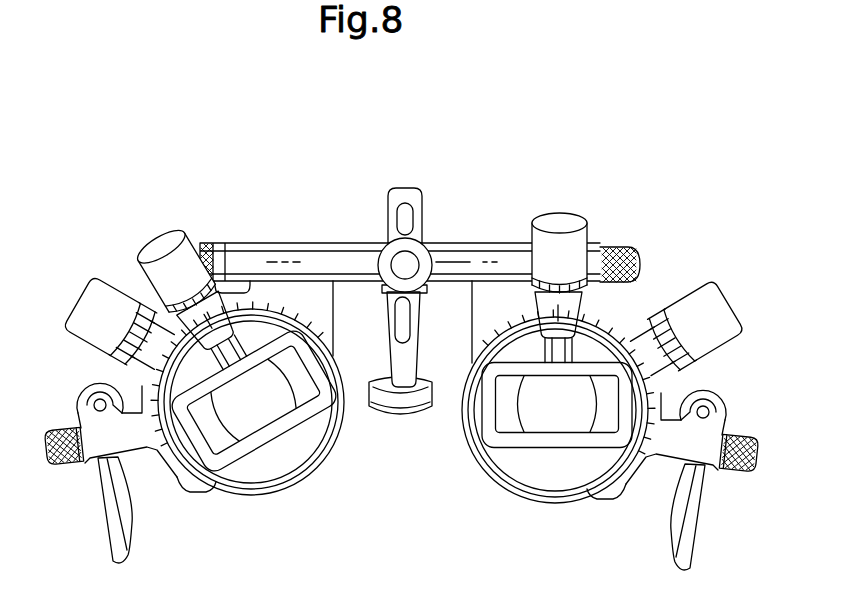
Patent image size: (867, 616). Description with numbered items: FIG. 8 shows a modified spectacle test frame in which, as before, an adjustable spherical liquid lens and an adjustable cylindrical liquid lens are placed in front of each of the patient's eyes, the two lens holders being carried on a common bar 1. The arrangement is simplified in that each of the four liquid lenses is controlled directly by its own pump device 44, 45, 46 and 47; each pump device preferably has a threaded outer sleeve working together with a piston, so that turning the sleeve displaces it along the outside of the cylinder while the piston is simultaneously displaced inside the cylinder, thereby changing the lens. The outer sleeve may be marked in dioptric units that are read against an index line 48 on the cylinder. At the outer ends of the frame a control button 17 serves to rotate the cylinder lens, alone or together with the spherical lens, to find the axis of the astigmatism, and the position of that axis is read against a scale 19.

The bar 1 is at (297, 257).
The control button 17 is at (61, 466).
The scale 19 is at (177, 477).
The pump device 44 is at (90, 302).
The pump device 45 is at (183, 257).
The pump device 46 is at (577, 250).
The pump device 47 is at (693, 310).
The index line 48 is at (688, 348).